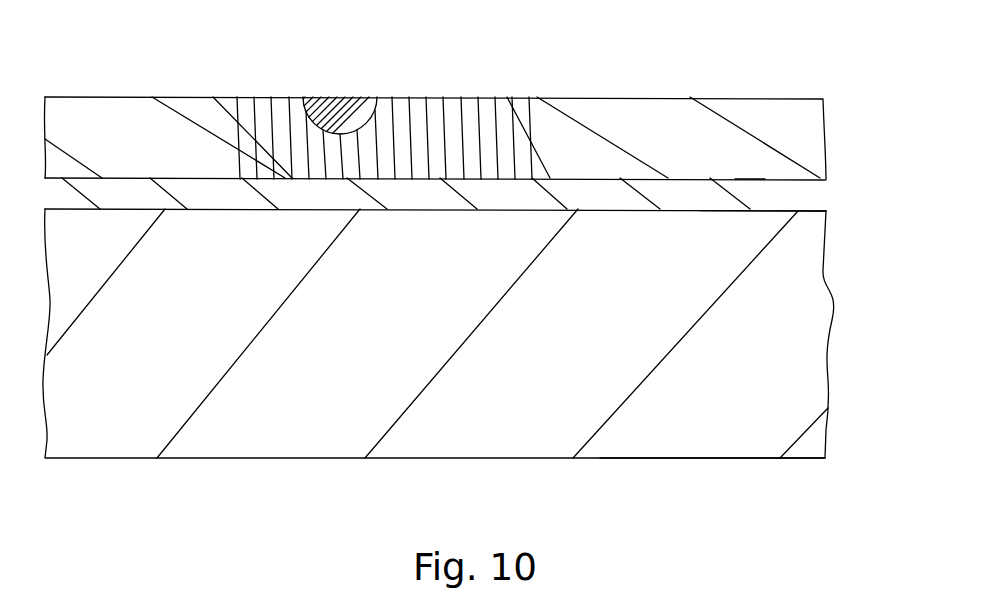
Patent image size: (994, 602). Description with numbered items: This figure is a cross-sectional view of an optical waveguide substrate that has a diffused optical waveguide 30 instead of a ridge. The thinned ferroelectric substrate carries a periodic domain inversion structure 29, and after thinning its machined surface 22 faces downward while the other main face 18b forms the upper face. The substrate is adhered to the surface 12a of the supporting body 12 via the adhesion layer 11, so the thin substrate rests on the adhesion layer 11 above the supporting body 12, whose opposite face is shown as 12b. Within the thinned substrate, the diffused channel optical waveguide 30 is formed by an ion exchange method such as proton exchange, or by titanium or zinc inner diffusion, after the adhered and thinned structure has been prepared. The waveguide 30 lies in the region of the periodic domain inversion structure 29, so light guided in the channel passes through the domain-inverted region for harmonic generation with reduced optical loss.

The adhesion layer 11 is at (812, 198).
The supporting body 12 is at (807, 338).
The surface of the supporting body 12a is at (775, 210).
The lower surface of substrate 12b is at (758, 460).
The other main face of the substrate 18b is at (724, 110).
The machined surface of the substrate 22 is at (750, 181).
The periodic domain inversion structure 29 is at (467, 116).
The diffused optical waveguide 30 is at (351, 116).